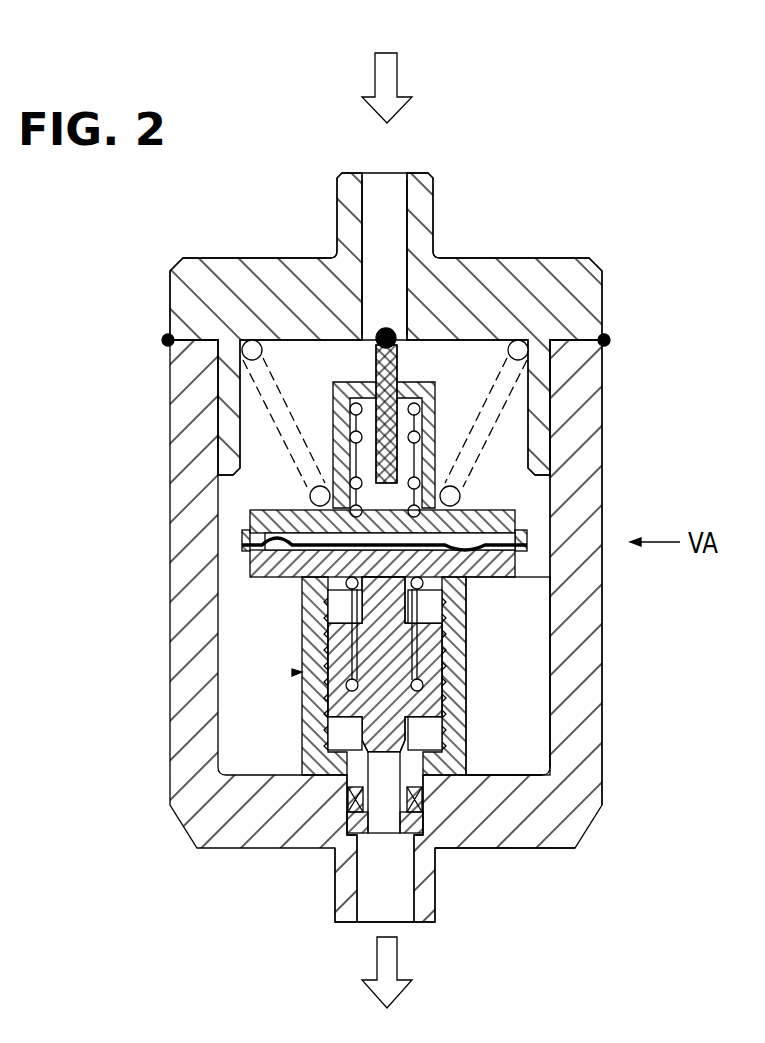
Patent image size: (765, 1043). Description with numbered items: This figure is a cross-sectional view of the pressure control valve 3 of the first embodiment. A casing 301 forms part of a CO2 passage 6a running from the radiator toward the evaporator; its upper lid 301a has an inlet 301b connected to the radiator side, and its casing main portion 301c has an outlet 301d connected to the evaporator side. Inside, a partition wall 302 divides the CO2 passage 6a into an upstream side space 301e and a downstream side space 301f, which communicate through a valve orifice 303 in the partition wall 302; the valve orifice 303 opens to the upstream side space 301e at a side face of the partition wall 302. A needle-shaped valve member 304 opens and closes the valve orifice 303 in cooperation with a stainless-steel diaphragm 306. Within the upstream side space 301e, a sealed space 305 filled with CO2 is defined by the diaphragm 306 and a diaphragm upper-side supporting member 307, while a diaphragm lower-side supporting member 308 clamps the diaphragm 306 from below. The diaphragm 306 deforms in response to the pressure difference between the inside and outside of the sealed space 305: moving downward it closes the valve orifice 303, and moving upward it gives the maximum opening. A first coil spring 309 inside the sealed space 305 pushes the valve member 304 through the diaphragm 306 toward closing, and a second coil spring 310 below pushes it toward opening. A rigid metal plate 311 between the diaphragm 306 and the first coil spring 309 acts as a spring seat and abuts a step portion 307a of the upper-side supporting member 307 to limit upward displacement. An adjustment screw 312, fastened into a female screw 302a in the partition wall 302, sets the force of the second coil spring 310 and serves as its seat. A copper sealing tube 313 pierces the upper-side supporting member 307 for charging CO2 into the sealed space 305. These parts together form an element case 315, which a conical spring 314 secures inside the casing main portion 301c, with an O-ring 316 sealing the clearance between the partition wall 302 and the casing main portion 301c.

The pressure control valve 3 is at (620, 260).
The casing 301 is at (606, 646).
The upper lid 301a is at (558, 296).
The inlet 301b is at (388, 185).
The casing main portion 301c is at (602, 493).
The outlet 301d is at (397, 915).
The upstream side space 301e is at (510, 742).
The downstream side space 301f is at (345, 853).
The partition wall 302 is at (312, 700).
The female screw 302a is at (466, 668).
The valve orifice 303 is at (428, 800).
The valve member 304 is at (380, 640).
The sealed space 305 is at (363, 458).
The diaphragm 306 is at (470, 575).
The diaphragm upper-side supporting member 307 is at (312, 513).
The step portion 307a is at (327, 505).
The diaphragm lower-side supporting member 308 is at (350, 585).
The first coil spring 309 is at (430, 420).
The second coil spring 310 is at (355, 622).
The plate 311 is at (340, 482).
The adjustment screw 312 is at (310, 717).
The sealing tube 313 is at (397, 363).
The conical spring 314 is at (480, 402).
The element case 315 is at (296, 673).
The O-ring 316 is at (418, 812).
The CO2 passage 6a is at (512, 622).